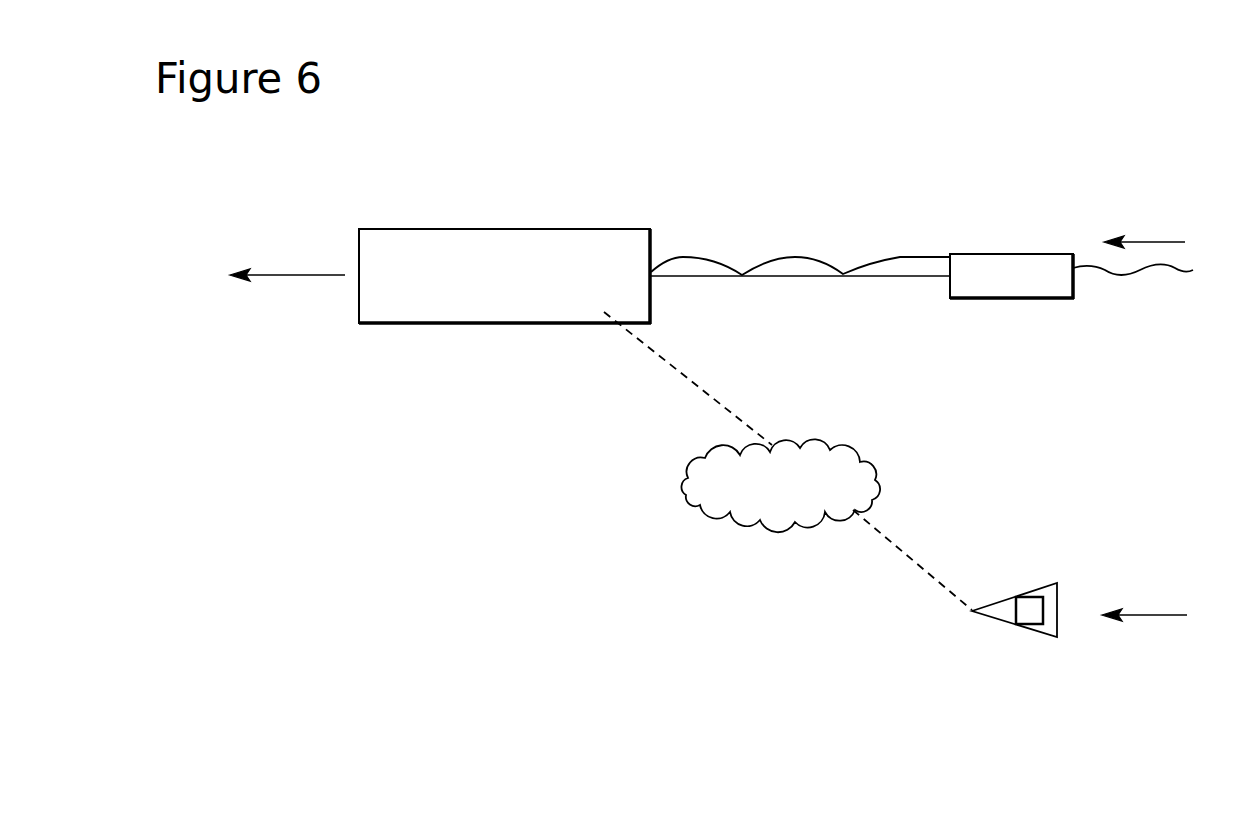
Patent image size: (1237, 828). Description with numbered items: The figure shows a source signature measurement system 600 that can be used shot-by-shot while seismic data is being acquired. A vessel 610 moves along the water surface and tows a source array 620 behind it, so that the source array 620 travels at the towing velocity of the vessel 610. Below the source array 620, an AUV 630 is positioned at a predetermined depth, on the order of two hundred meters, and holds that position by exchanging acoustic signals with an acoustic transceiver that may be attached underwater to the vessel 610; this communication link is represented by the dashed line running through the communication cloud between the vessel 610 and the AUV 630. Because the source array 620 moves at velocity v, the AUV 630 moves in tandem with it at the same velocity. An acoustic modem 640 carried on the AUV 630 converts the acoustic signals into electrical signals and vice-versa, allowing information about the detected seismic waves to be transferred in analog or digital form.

The source signature measurement system 600 is at (756, 159).
The vessel 610 is at (472, 323).
The source array 620 is at (1000, 254).
The AUV 630 is at (1058, 583).
The acoustic modem 640 is at (1028, 617).